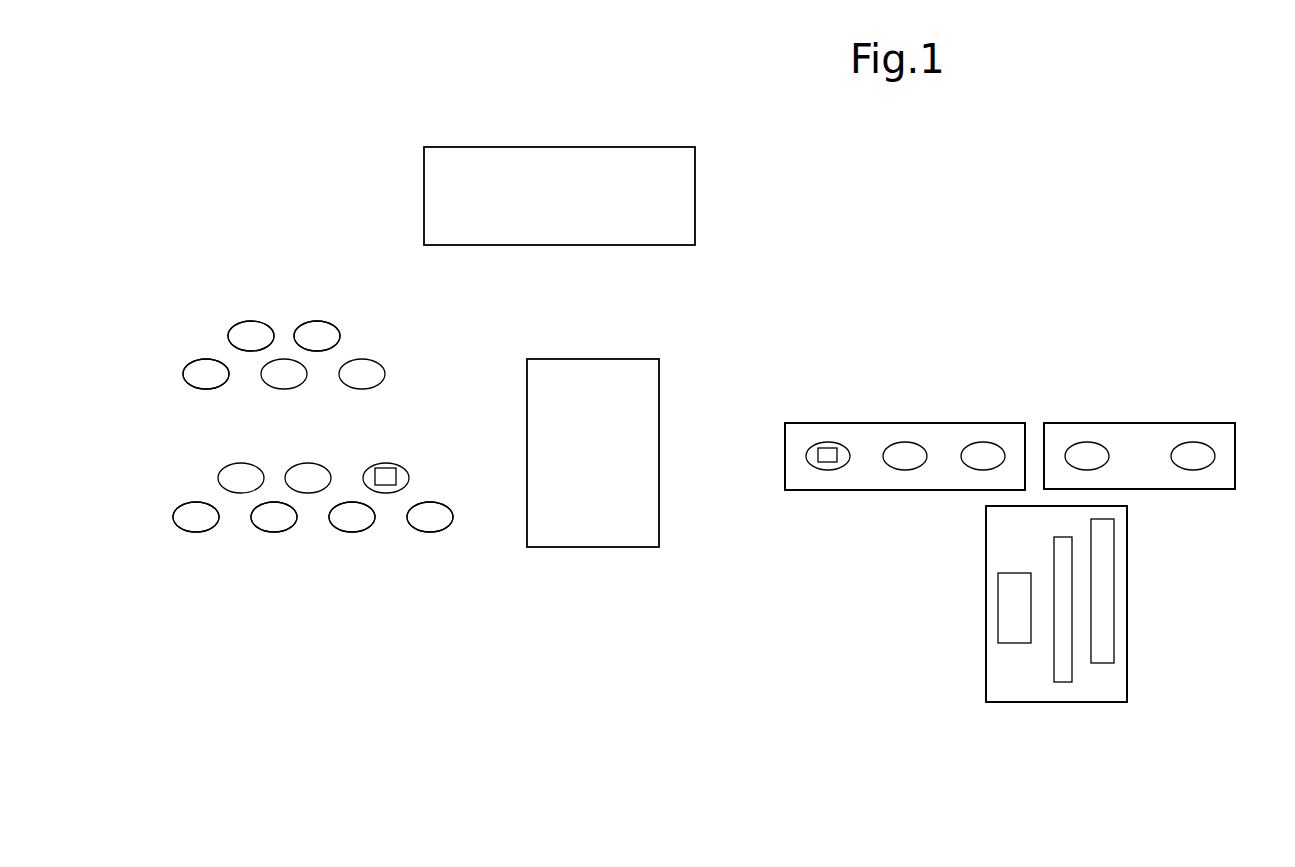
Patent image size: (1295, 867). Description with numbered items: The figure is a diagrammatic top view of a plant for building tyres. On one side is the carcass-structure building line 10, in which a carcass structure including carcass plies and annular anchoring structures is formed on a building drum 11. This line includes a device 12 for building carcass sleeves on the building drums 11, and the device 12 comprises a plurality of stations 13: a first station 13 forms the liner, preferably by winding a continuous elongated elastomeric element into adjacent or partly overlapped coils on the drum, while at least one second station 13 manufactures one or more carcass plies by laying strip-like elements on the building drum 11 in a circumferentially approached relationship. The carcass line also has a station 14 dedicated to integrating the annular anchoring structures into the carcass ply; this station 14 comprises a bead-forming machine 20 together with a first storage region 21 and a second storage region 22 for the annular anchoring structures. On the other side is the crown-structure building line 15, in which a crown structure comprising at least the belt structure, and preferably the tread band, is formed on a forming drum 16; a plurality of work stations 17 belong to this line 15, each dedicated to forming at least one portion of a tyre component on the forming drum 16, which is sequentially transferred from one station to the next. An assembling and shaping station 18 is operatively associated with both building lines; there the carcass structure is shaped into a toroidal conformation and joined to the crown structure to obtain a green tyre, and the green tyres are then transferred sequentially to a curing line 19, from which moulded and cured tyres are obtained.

The carcass-structure building line 10 is at (993, 317).
The building drum 11 is at (828, 448).
The device for building carcass sleeves 12 is at (1143, 417).
The station 13 is at (983, 453).
The station dedicated to integrating the annular anchoring structures 14 is at (1028, 703).
The crown-structure building line 15 is at (143, 303).
The forming drum 16 is at (387, 470).
The work station 17 is at (206, 370).
The assembling and shaping station 18 is at (608, 463).
The curing line 19 is at (568, 207).
The bead-forming machine 20 is at (1012, 609).
The first storage region 21 is at (1076, 670).
The second storage region 22 is at (1118, 607).